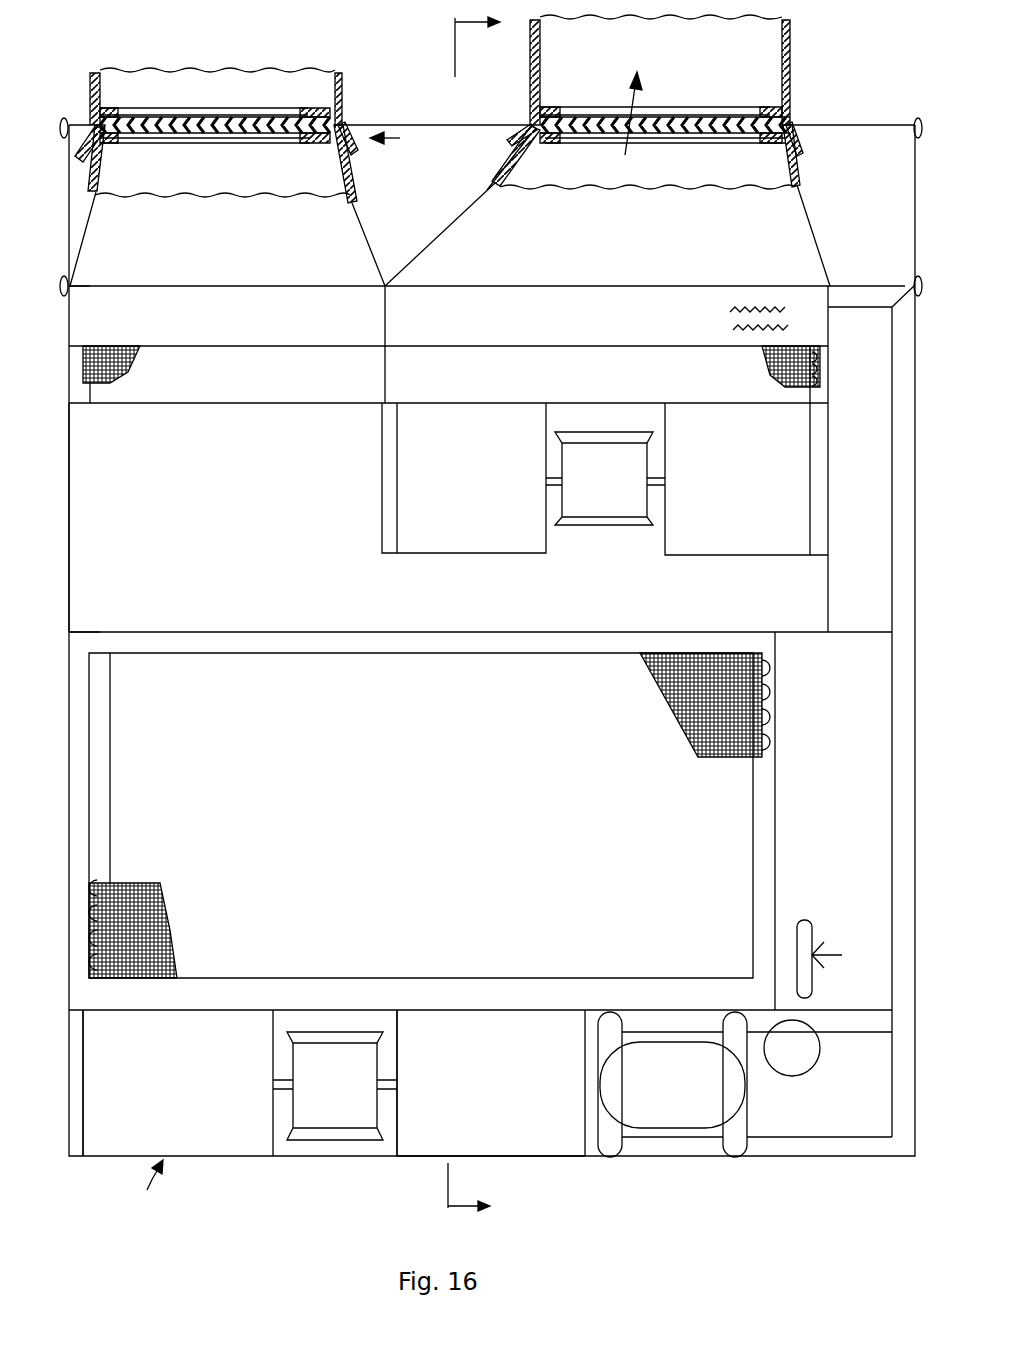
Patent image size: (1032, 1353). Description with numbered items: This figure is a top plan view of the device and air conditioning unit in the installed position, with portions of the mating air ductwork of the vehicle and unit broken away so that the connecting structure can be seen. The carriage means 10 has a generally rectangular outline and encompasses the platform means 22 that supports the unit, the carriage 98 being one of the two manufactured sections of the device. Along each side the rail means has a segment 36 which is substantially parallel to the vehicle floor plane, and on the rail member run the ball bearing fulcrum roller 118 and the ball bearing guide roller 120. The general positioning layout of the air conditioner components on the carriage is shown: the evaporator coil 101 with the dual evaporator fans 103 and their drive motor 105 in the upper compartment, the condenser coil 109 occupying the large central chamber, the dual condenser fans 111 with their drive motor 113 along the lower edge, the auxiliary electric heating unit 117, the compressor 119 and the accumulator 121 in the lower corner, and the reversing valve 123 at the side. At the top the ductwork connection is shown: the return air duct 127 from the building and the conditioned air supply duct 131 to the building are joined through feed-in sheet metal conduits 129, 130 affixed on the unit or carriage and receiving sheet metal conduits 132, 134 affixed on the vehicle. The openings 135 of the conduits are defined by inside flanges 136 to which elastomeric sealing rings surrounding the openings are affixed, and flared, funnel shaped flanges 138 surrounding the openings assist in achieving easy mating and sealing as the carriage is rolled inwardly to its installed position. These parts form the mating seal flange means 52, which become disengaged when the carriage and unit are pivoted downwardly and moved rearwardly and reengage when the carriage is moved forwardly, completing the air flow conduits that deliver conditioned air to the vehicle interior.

The carriage means 10 is at (306, 623).
The platform means 22 is at (232, 484).
The rail segment 36 is at (333, 104).
The mating seal flange means 52 is at (404, 140).
The carriage 98 is at (69, 640).
The evaporator coil 101 is at (526, 390).
The dual evaporator fans 103 is at (470, 484).
The drive motor 105 is at (607, 526).
The condenser coil 109 is at (448, 818).
The dual condenser fans 111 is at (240, 1036).
The drive motor 113 is at (352, 1032).
The auxiliary electric heating unit 117 is at (768, 297).
The ball bearing fulcrum roller 118 is at (70, 290).
The compressor 119 is at (668, 1070).
The ball bearing guide roller 120 is at (66, 118).
The accumulator 121 is at (790, 1057).
The reversing valve 123 is at (806, 935).
The return air duct 127 is at (173, 107).
The feed-in sheet metal conduit 129 is at (355, 195).
The feed-in sheet metal conduit 130 is at (497, 170).
The conditioned air supply duct 131 is at (635, 128).
The receiving sheet metal conduit 132 is at (343, 72).
The receiving sheet metal conduit 134 is at (530, 50).
The conduit openings 135 is at (263, 112).
The inside flange 136 is at (315, 141).
The flared funnel shaped flange 138 is at (354, 150).